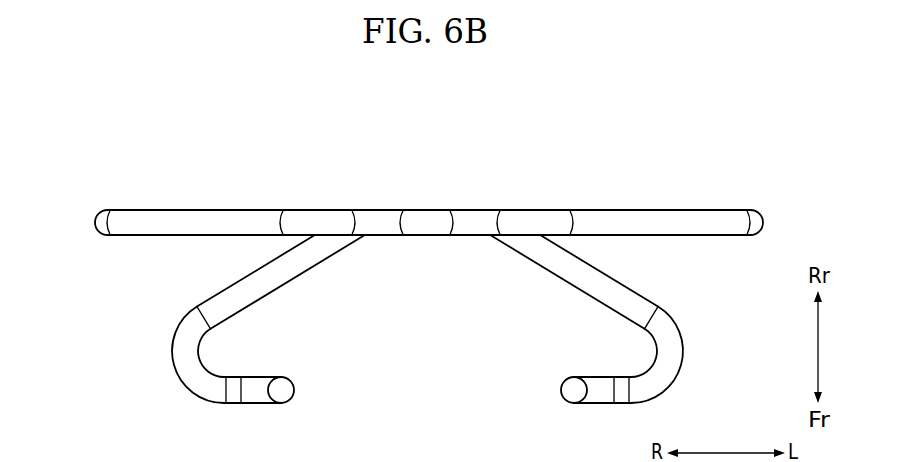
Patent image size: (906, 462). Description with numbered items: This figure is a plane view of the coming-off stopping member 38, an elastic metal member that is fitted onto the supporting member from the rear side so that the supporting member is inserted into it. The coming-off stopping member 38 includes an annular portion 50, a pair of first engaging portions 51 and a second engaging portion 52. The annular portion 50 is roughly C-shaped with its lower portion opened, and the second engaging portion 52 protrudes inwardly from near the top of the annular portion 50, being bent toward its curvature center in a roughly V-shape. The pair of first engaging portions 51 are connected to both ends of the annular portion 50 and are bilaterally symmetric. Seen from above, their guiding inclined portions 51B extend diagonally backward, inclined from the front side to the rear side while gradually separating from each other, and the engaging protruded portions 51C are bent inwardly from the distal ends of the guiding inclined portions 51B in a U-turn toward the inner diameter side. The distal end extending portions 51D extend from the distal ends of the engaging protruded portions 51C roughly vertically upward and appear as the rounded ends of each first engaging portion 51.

The coming-off stopping member 38 is at (203, 148).
The annular portion 50 is at (660, 220).
The first engaging portions 51 is at (305, 305).
The guiding inclined portions 51B is at (245, 278).
The engaging protruded portions 51C is at (175, 349).
The distal end extending portions 51D is at (290, 389).
The second engaging portion 52 is at (422, 220).